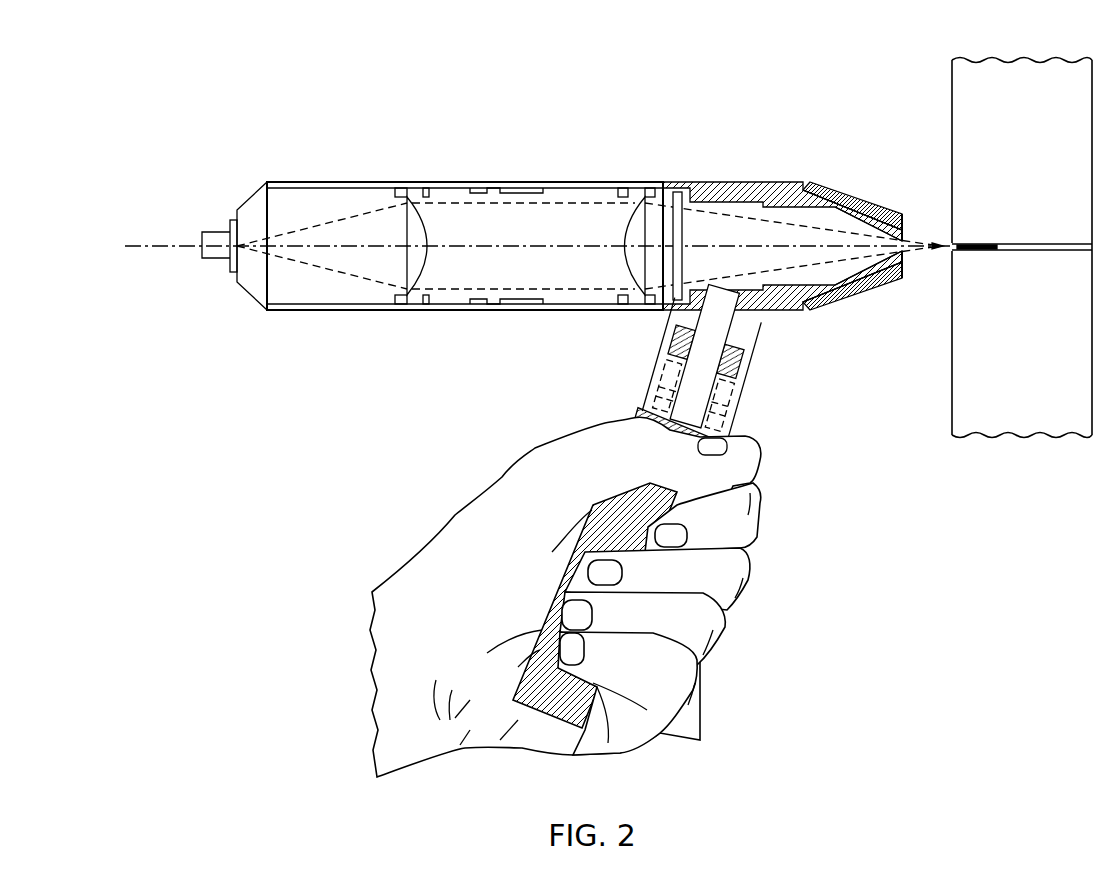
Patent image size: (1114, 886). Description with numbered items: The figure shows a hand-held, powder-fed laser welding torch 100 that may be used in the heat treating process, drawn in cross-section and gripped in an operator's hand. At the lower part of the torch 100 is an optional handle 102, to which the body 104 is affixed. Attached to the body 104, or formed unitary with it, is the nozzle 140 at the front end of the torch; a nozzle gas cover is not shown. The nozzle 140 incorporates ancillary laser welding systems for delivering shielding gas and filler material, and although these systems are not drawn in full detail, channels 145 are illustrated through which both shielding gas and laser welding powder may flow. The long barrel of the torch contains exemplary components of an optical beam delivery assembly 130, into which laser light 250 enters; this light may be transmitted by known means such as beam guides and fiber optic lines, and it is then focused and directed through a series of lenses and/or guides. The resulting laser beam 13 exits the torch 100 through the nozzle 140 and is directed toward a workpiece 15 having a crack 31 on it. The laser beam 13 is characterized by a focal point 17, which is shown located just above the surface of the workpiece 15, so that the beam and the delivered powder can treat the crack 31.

The hand-held laser torch 100 is at (535, 410).
The optical beam delivery assembly 130 is at (297, 181).
The laser light 250 is at (150, 245).
The body 104 is at (750, 310).
The channels 145 is at (778, 167).
The nozzle 140 is at (825, 182).
The laser beam 13 is at (907, 253).
The focal point 17 is at (943, 243).
The workpiece 15 is at (1027, 151).
The crack 31 is at (1011, 243).
The handle 102 is at (565, 720).